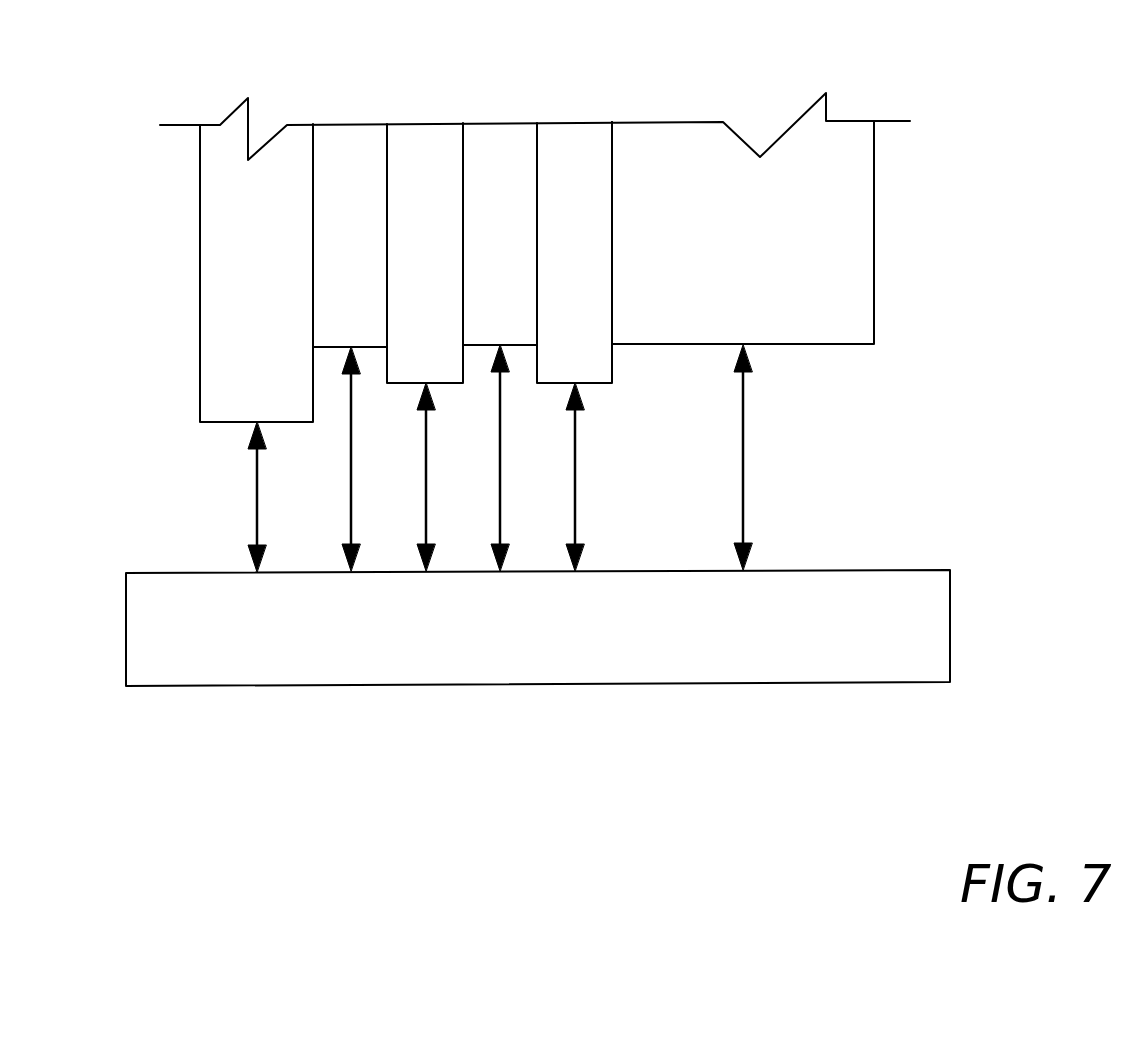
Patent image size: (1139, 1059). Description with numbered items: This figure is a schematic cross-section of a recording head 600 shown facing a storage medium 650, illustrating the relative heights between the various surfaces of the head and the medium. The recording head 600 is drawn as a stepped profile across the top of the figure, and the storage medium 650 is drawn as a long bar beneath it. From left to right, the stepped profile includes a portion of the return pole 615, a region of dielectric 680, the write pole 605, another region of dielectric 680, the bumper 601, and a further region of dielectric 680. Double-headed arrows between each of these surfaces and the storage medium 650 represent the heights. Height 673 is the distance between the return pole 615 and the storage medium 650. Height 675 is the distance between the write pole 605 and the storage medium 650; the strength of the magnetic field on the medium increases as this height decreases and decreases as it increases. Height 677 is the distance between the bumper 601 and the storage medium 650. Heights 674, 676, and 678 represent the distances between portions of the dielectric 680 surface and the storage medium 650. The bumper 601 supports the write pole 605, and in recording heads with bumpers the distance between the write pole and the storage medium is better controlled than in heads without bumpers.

The recording head 600 is at (876, 82).
The return pole 615 is at (217, 163).
The dielectric 680 is at (348, 163).
The write pole 605 is at (423, 163).
The bumper 601 is at (572, 163).
The storage medium 650 is at (951, 625).
The height 673 is at (253, 481).
The height 674 is at (347, 481).
The height 675 is at (422, 481).
The height 676 is at (496, 481).
The height 677 is at (571, 481).
The height 678 is at (739, 480).